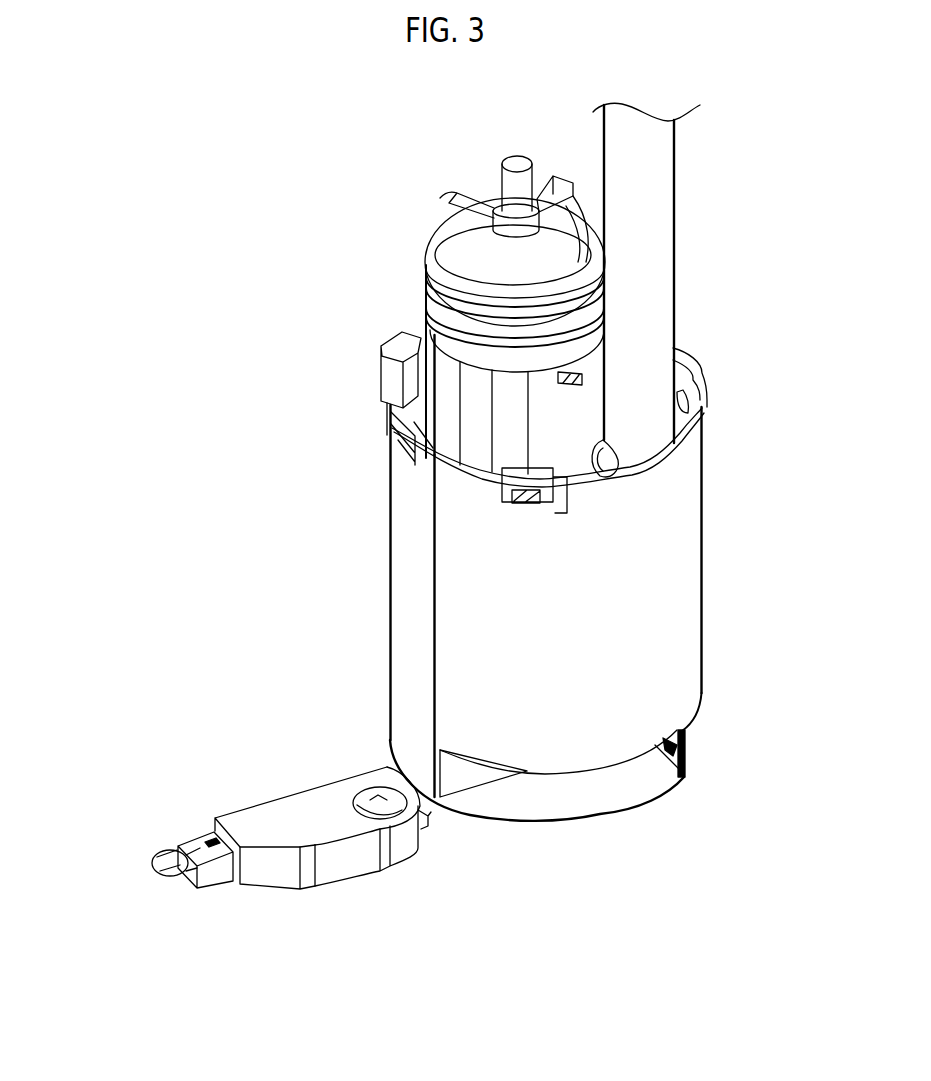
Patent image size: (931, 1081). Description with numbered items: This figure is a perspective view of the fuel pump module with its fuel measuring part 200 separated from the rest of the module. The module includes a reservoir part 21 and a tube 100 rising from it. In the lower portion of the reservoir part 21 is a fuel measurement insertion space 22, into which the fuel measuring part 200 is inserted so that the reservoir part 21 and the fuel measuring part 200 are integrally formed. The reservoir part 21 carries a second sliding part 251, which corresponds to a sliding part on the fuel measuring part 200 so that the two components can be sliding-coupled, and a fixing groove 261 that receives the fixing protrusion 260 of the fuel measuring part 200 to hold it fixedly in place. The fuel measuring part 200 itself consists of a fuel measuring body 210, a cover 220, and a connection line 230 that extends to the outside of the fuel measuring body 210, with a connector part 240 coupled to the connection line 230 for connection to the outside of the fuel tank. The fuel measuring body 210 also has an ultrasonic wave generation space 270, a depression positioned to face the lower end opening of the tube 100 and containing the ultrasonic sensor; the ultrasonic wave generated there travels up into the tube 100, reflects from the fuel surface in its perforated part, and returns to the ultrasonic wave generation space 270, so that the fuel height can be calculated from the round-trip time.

The tube 100 is at (648, 290).
The reservoir part 21 is at (663, 577).
The fuel measurement insertion space 22 is at (597, 783).
The second sliding part 251 is at (484, 784).
The fixing groove 261 is at (688, 755).
The fuel measuring part 200 is at (273, 760).
The fuel measuring body 210 is at (273, 872).
The cover 220 is at (350, 880).
The connection line 230 is at (155, 870).
The connector part 240 is at (215, 887).
The fixing protrusion 260 is at (428, 817).
The ultrasonic wave generation space 270 is at (387, 790).